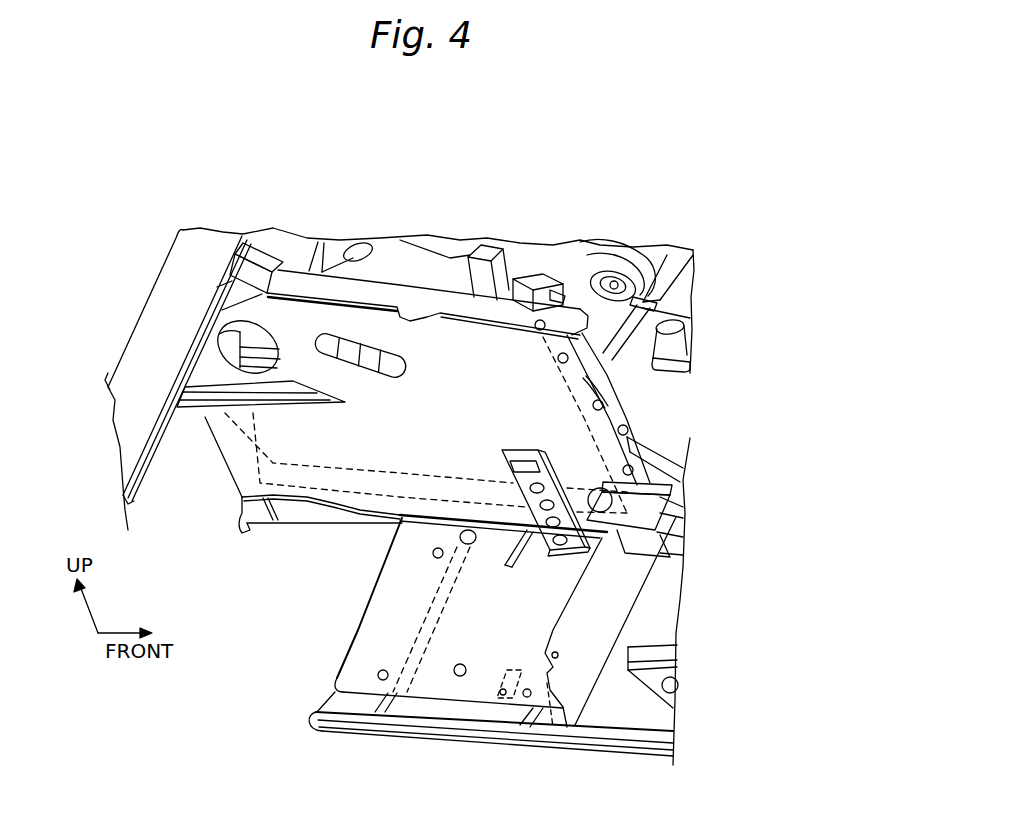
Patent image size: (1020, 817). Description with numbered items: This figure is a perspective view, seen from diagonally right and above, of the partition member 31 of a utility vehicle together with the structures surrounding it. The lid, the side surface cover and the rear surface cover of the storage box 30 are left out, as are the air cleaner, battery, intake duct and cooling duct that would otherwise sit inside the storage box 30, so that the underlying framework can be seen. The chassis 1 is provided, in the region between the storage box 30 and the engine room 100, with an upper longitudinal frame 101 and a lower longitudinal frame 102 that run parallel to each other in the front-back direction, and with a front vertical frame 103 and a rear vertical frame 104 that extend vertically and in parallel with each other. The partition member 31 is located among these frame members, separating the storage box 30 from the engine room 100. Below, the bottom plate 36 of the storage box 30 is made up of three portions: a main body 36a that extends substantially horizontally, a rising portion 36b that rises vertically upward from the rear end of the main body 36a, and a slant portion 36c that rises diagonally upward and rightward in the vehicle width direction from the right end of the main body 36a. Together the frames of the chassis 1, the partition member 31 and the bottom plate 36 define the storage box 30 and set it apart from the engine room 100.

The chassis 1 is at (289, 256).
The engine room 100 is at (672, 387).
The upper longitudinal frame 101 is at (389, 292).
The lower longitudinal frame 102 is at (302, 514).
The front vertical frame 103 is at (628, 418).
The rear vertical frame 104 is at (255, 510).
The storage box 30 is at (573, 597).
The partition member 31 is at (366, 481).
The bottom plate 36 is at (438, 696).
The main body 36a is at (355, 671).
The rising portion 36b is at (345, 664).
The slant portion 36c is at (353, 695).